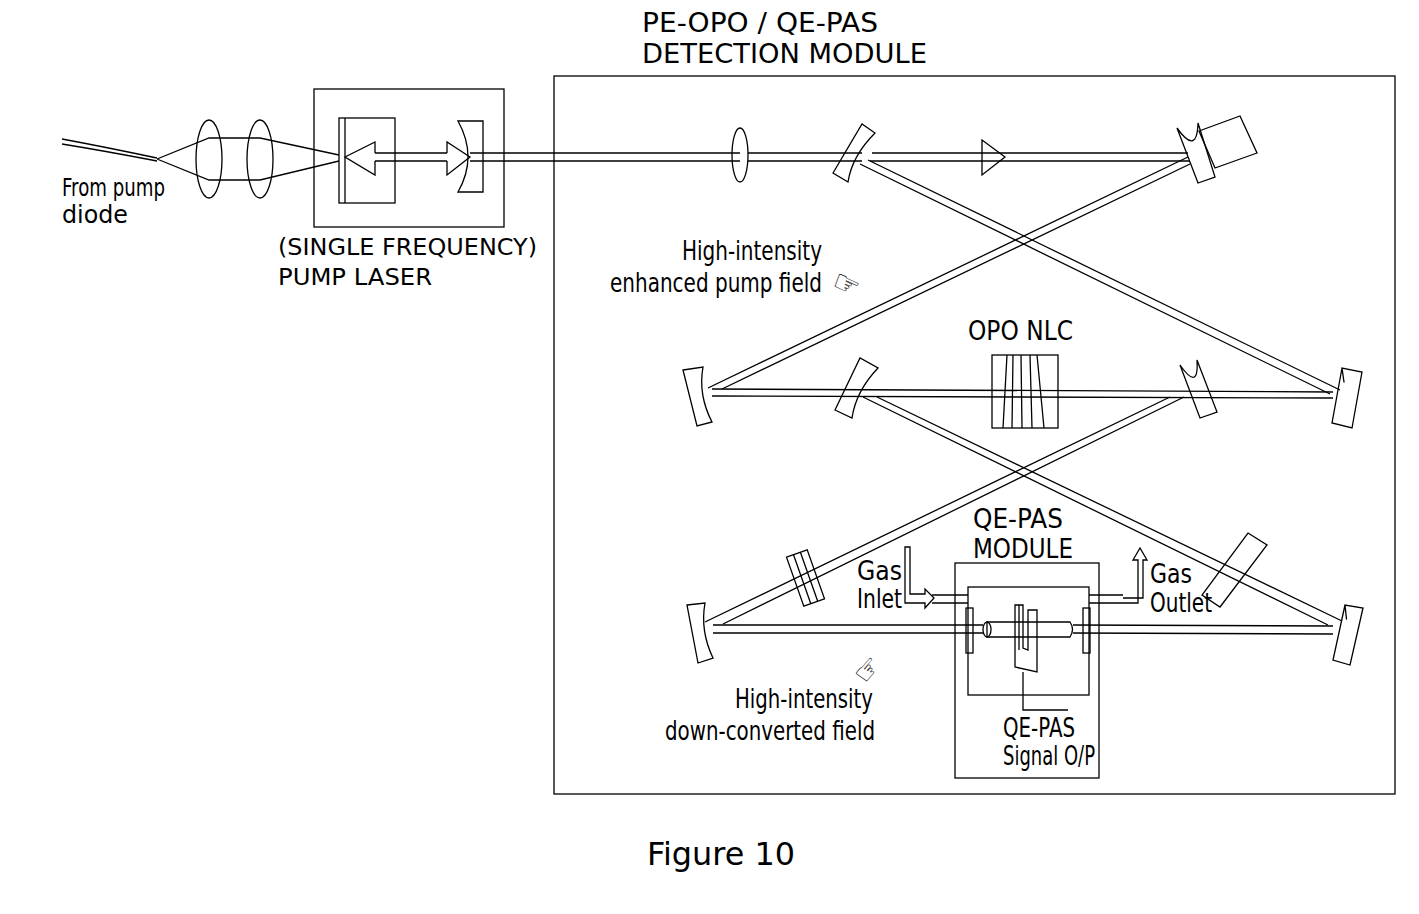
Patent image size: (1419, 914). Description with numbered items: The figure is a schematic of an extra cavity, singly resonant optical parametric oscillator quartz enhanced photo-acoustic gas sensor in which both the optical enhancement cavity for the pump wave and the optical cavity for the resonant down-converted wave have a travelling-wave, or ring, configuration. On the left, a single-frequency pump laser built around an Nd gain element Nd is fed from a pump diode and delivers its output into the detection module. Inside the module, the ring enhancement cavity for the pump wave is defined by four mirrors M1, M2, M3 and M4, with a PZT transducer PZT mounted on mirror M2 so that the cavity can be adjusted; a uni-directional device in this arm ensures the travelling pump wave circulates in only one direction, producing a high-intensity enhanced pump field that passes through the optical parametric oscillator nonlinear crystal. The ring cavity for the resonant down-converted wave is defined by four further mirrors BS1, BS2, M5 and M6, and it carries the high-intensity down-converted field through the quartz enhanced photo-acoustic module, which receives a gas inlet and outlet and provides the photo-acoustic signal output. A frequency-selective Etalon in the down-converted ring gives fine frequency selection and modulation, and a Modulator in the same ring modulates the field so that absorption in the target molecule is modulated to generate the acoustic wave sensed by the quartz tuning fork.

The Nd gain medium of single-frequency pump laser Nd is at (367, 160).
The mirror M1 is at (852, 170).
The mirror M2 is at (1202, 171).
The piezoelectric transducer PZT is at (1258, 139).
The mirror M3 is at (692, 414).
The mirror M4 is at (1349, 415).
The mirror BS1 is at (849, 406).
The mirror BS2 is at (1207, 408).
The mirror M5 is at (693, 650).
The mirror M6 is at (1352, 651).
The etalon Etalon is at (697, 525).
The modulator Modulator is at (1232, 554).